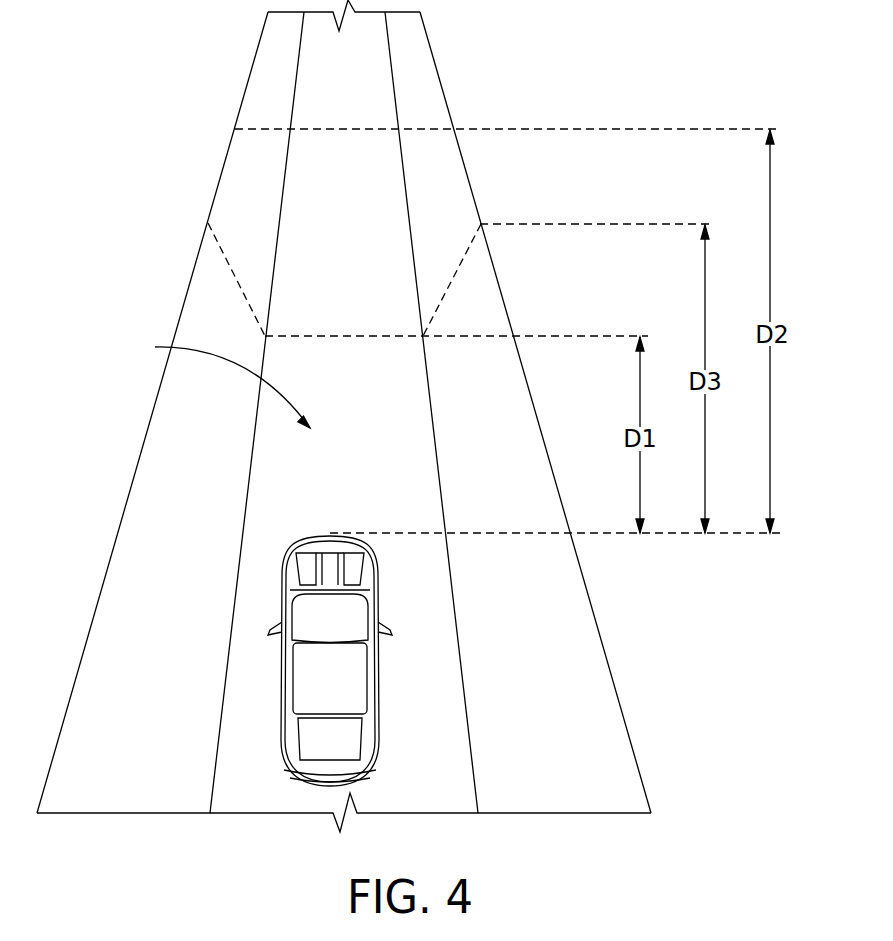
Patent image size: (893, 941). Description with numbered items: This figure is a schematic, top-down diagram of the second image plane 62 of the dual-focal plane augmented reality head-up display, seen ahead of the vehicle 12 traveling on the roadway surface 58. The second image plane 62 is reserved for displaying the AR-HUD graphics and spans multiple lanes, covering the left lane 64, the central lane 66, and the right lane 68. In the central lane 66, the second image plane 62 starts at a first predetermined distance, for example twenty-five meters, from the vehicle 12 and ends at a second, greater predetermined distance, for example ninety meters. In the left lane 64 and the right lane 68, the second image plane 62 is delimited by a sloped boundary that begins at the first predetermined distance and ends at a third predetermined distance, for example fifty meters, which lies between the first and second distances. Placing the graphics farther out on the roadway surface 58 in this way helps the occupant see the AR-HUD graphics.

The vehicle 12 is at (319, 684).
The roadway surface 58 is at (219, 383).
The second image plane 62 is at (260, 127).
The left lane 64 is at (175, 483).
The central lane 66 is at (400, 493).
The right lane 68 is at (505, 422).